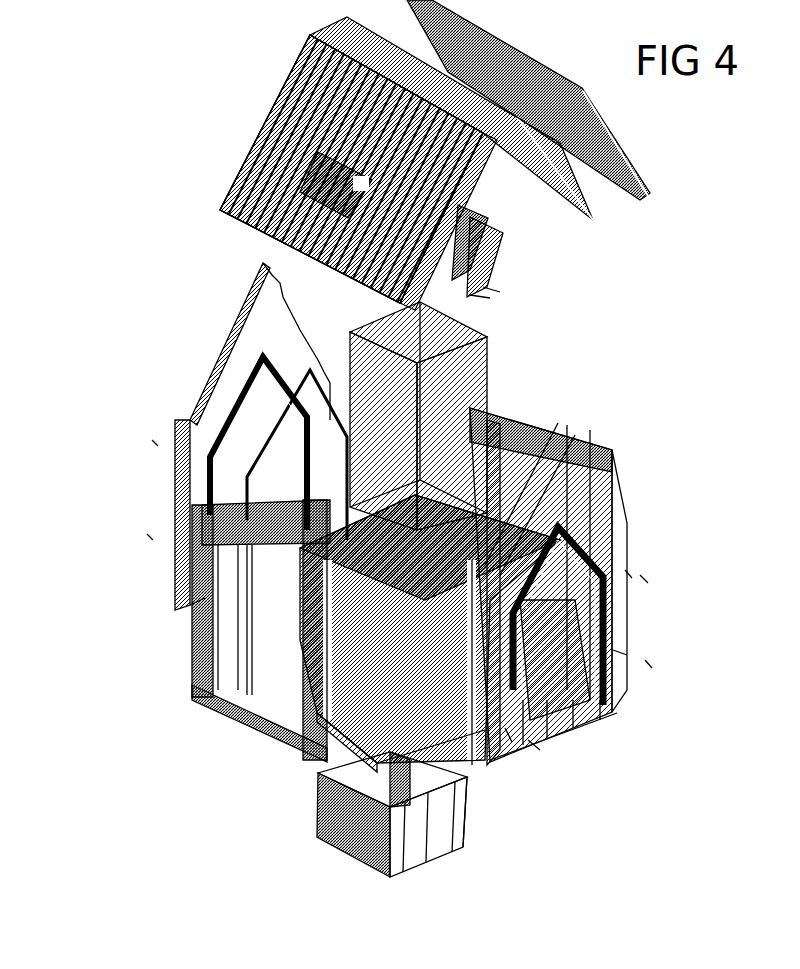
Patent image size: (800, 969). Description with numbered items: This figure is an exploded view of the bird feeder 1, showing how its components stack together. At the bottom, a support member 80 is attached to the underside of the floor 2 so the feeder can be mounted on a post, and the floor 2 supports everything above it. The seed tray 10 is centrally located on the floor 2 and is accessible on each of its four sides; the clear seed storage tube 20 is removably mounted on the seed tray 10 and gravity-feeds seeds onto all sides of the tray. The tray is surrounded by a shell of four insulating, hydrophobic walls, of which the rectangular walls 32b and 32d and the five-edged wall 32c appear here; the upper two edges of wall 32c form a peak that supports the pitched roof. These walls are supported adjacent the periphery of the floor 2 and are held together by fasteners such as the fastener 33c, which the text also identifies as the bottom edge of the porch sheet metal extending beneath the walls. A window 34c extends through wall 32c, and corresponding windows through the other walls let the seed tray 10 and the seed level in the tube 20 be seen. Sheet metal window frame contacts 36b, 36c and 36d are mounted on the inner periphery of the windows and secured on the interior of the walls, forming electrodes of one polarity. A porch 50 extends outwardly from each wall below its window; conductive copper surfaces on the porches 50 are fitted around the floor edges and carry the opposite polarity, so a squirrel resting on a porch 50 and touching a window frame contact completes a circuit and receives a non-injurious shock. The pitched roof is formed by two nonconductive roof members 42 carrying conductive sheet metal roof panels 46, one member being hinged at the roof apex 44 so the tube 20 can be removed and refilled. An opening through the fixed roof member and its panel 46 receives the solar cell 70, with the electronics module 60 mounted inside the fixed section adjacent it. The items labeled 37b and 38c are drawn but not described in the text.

The bird feeder 1 is at (170, 400).
The floor 2 is at (463, 847).
The seed tray 10 is at (395, 580).
The seed storage tube 20 is at (467, 362).
The wall 32b is at (197, 537).
The wall 32c is at (620, 510).
The wall 32d is at (612, 468).
The fastener 33c is at (507, 740).
The window 34c is at (613, 650).
The window frame contact 36b is at (190, 683).
The window frame contact 36c is at (527, 727).
The window frame contact 36d is at (490, 437).
The window insert 37b is at (583, 697).
The fastener 38c is at (533, 748).
The roof member 42 is at (348, 33).
The roof apex 44 is at (397, 50).
The roof panel 46 is at (655, 195).
The porch 50 is at (320, 777).
The electronics module 60 is at (485, 293).
The solar cell 70 is at (485, 288).
The support member 80 is at (385, 874).